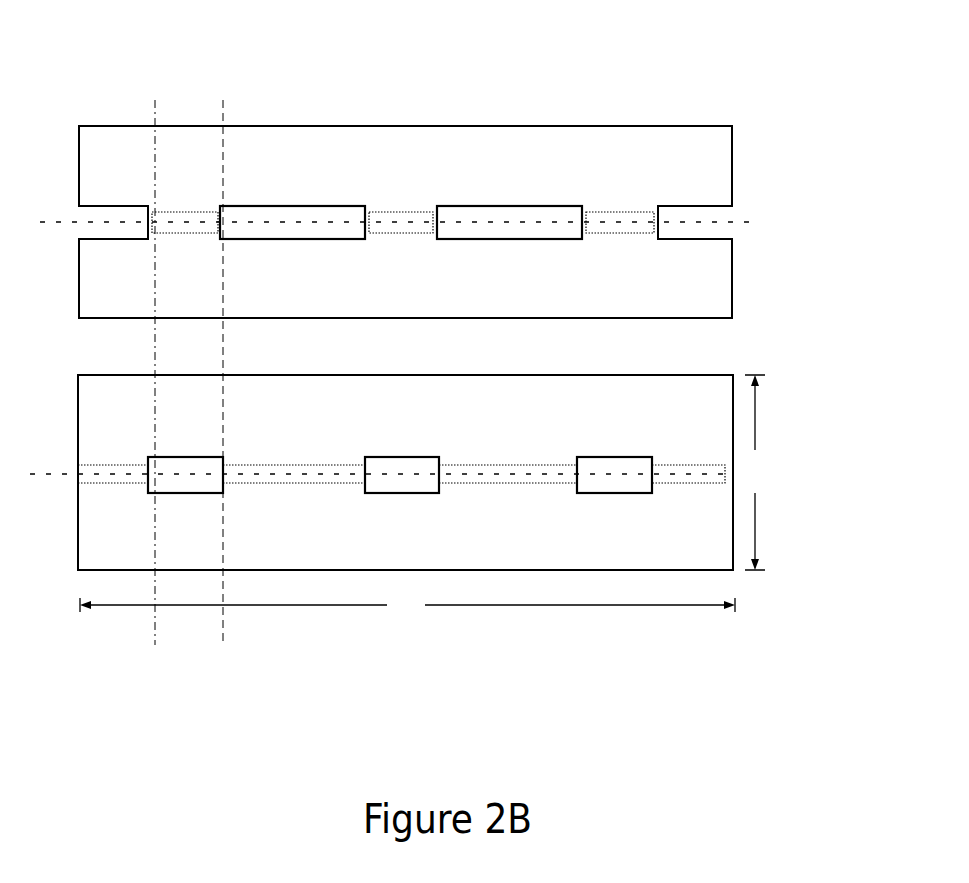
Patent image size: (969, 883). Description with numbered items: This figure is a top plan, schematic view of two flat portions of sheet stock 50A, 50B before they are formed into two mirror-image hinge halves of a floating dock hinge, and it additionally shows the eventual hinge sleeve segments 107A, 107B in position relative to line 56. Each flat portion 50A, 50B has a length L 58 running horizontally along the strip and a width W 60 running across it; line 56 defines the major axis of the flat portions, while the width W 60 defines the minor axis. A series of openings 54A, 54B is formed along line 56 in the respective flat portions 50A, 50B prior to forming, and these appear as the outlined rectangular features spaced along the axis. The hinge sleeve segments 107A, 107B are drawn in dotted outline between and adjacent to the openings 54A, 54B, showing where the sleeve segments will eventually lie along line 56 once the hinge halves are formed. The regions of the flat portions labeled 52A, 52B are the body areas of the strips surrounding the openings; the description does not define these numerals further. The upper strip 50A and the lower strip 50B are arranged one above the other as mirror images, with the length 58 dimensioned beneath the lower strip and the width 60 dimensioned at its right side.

The flat portion of sheet stock 50A is at (429, 167).
The body of first member 52A is at (428, 175).
The openings 54A is at (512, 228).
The hinge sleeve segments 107A is at (393, 210).
The flat portion of sheet stock 50B is at (390, 573).
The body of second member 52B is at (278, 527).
The openings 54B is at (182, 492).
The hinge sleeve segments 107B is at (513, 488).
The line 56 is at (57, 222).
The length 58 is at (412, 617).
The width 60 is at (768, 457).